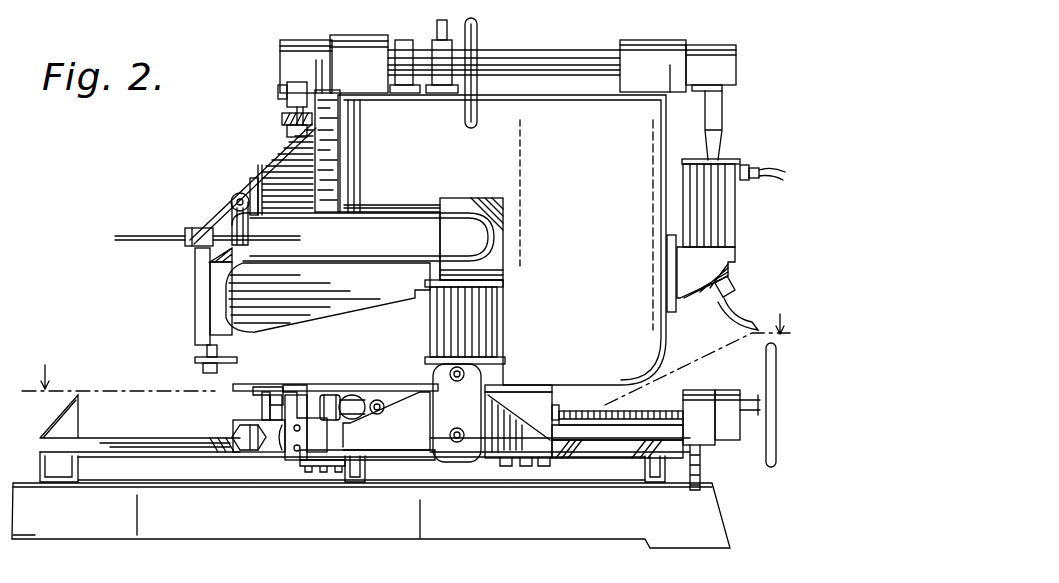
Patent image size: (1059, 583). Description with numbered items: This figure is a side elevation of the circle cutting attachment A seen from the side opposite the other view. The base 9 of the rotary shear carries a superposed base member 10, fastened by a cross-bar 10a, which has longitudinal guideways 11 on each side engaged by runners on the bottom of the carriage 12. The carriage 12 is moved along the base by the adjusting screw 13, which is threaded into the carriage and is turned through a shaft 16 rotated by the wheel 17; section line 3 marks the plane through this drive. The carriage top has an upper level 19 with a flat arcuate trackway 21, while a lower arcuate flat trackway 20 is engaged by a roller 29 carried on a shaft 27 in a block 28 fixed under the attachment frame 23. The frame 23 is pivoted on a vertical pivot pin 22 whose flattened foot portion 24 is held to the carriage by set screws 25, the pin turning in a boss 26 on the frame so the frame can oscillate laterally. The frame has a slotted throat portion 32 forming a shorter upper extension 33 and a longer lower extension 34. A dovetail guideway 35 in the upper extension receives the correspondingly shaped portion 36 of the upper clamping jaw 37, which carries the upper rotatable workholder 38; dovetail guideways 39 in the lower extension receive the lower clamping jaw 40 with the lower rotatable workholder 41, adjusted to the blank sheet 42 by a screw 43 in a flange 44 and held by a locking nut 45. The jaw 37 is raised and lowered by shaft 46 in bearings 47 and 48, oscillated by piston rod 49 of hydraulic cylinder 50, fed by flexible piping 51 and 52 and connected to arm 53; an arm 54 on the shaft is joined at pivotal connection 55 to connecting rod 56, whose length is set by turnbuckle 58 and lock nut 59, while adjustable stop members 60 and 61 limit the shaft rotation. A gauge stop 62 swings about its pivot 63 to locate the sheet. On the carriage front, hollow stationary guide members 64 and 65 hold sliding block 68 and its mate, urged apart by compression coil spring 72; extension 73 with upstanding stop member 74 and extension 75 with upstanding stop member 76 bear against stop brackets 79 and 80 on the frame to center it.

The section line 3 is at (406, 347).
The base 9 is at (371, 515).
The superposed base member 10 is at (192, 462).
The cross-bar 10a is at (58, 482).
The longitudinal guideways 11 is at (143, 440).
The carriage 12 is at (370, 445).
The adjusting screw 13 is at (630, 414).
The shaft 16 is at (748, 398).
The wheel 17 is at (771, 466).
The upper level 19 is at (580, 393).
The arcuate flat trackway 20 is at (300, 388).
The flat arcuate trackway 21 is at (548, 393).
The pivot pin 22 is at (492, 278).
The attachment frame 23 is at (502, 240).
The flattened foot portion 24 is at (456, 462).
The set screws 25 is at (500, 393).
The boss 26 is at (470, 300).
The shaft 27 is at (382, 400).
The block 28 is at (355, 396).
The roller 29 is at (330, 395).
The slotted throat portion 32 is at (368, 237).
The upper extension 33 is at (420, 212).
The lower extension 34 is at (328, 297).
The dovetail guideway 35 is at (338, 148).
The correspondingly shaped portion 36 is at (307, 231).
The upper clamping jaw 37 is at (248, 172).
The upper rotatable workholder 38 is at (205, 222).
The dovetail guideways 39 is at (218, 300).
The lower clamping jaw 40 is at (195, 272).
The lower rotatable workholder 41 is at (190, 246).
The blank sheet 42 is at (115, 238).
The screw 43 is at (207, 349).
The flange 44 is at (195, 360).
The locking nut 45 is at (203, 370).
The shaft 46 is at (505, 58).
The bearing 47 is at (342, 44).
The bearing 48 is at (632, 56).
The piston rod 49 is at (722, 138).
The hydraulic cylinder 50 is at (705, 207).
The flexible piping 51 is at (762, 168).
The flexible piping 52 is at (738, 302).
The arm 53 is at (728, 88).
The arm 54 is at (280, 64).
The pivotal connection 55 is at (278, 90).
The connecting rod 56 is at (295, 98).
The turnbuckle 58 is at (282, 138).
The lock nut 59 is at (282, 119).
The adjustable stop member 60 is at (402, 44).
The adjustable stop member 61 is at (442, 60).
The gauge stop 62 is at (275, 234).
The pivot 63 is at (236, 197).
The hollow stationary guide member 64 is at (238, 422).
The hollow stationary guide member 65 is at (318, 436).
The block 68 is at (235, 436).
The compression coil spring 72 is at (300, 462).
The extension 73 is at (316, 466).
The upstanding stop member 74 is at (276, 395).
The extension 75 is at (285, 452).
The upstanding stop member 76 is at (264, 395).
The stop bracket 79 is at (253, 392).
The stop bracket 80 is at (300, 385).
The machine A is at (591, 195).